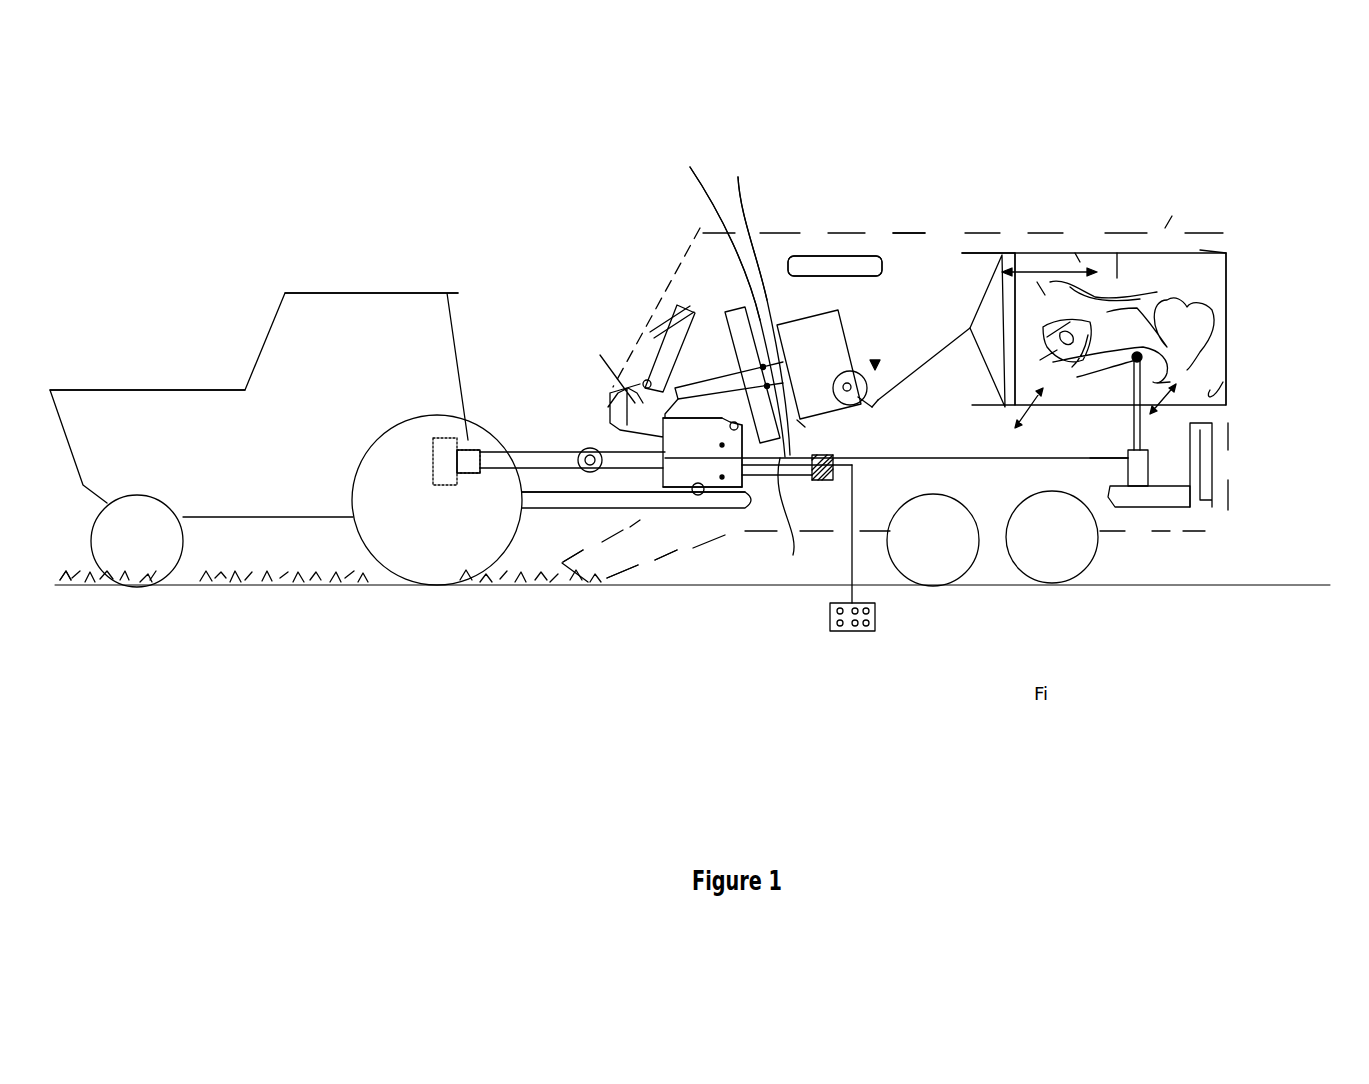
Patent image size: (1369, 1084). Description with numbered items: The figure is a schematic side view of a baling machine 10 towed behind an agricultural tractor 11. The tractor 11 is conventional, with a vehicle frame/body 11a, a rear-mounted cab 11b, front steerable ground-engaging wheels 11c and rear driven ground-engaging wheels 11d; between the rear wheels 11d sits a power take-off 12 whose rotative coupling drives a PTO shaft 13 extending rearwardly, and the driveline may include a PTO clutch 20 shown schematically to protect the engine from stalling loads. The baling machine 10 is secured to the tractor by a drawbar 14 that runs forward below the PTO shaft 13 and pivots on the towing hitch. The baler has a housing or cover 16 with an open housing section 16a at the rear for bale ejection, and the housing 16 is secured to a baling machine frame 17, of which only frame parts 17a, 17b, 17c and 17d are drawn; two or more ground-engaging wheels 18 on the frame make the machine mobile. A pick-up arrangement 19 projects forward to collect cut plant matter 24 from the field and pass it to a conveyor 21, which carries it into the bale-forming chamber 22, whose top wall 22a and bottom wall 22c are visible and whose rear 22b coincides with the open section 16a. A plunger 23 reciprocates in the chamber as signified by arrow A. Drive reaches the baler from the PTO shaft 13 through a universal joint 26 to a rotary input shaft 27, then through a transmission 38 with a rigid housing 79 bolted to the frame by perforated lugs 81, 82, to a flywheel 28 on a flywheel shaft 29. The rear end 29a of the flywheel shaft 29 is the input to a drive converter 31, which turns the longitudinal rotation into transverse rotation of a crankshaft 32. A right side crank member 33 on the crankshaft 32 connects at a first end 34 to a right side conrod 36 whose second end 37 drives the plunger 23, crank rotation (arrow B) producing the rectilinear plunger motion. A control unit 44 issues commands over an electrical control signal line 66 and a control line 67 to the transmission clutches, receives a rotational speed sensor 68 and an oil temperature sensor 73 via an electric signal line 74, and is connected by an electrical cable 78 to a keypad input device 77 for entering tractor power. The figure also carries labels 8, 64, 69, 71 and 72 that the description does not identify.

The arrow / bale direction 8 is at (878, 400).
The baling machine 10 is at (1165, 228).
The agricultural tractor 11 is at (425, 278).
The vehicle frame/body 11a is at (153, 417).
The rear-mounted cab 11b is at (293, 313).
The front steerable ground-engaging wheels 11c is at (132, 567).
The rear driven ground-engaging wheels 11d is at (432, 568).
The power take-off 12 is at (453, 440).
The PTO shaft 13 is at (543, 457).
The drawbar 14 is at (535, 497).
The housing or cover 16 is at (912, 230).
The open housing section 16a is at (1228, 262).
The baling machine frame 17 is at (857, 262).
The frame part 17a is at (680, 500).
The frame part 17b is at (676, 318).
The frame part 17c is at (817, 262).
The frame part 17d is at (1212, 465).
The ground-engaging wheels 18 is at (938, 578).
The pick-up arrangement 19 is at (563, 565).
The PTO clutch 20 is at (467, 457).
The conveyor 21 is at (603, 565).
The bale-forming chamber 22 is at (1200, 250).
The top wall 22a is at (1080, 253).
The rear of bale-forming chamber 22b is at (1228, 305).
The bottom wall 22c is at (1212, 392).
The plunger 23 is at (992, 305).
The cut plant matter 24 is at (273, 583).
The universal joint 26 is at (582, 448).
The rotary input shaft 27 is at (628, 495).
The flywheel 28 is at (720, 238).
The flywheel shaft 29 is at (714, 383).
The rear end of flywheel shaft 29a is at (757, 285).
The drive converter 31 is at (748, 228).
The crankshaft 32 is at (840, 362).
The right side crank member 33 is at (856, 405).
The first end of right side conrod 34 is at (873, 403).
The right side conrod 36 is at (960, 357).
The second end of right side conrod 37 is at (970, 335).
The transmission 38 is at (620, 388).
The control unit 44 is at (850, 478).
The hydraulic ram 64 is at (1160, 480).
The electrical control signal line 66 is at (791, 519).
The control line 67 is at (728, 443).
The rotational speed sensor 68 is at (612, 500).
The block 69 is at (805, 488).
The bar 71 is at (760, 315).
The hook 72 is at (790, 433).
The oil temperature sensor 73 is at (698, 482).
The electric signal line 74 is at (720, 500).
The input device 77 is at (833, 622).
The electrical cable 78 is at (855, 560).
The rigid housing 79 is at (703, 422).
The perforated lug 81 is at (702, 500).
The perforated lug 82 is at (647, 378).